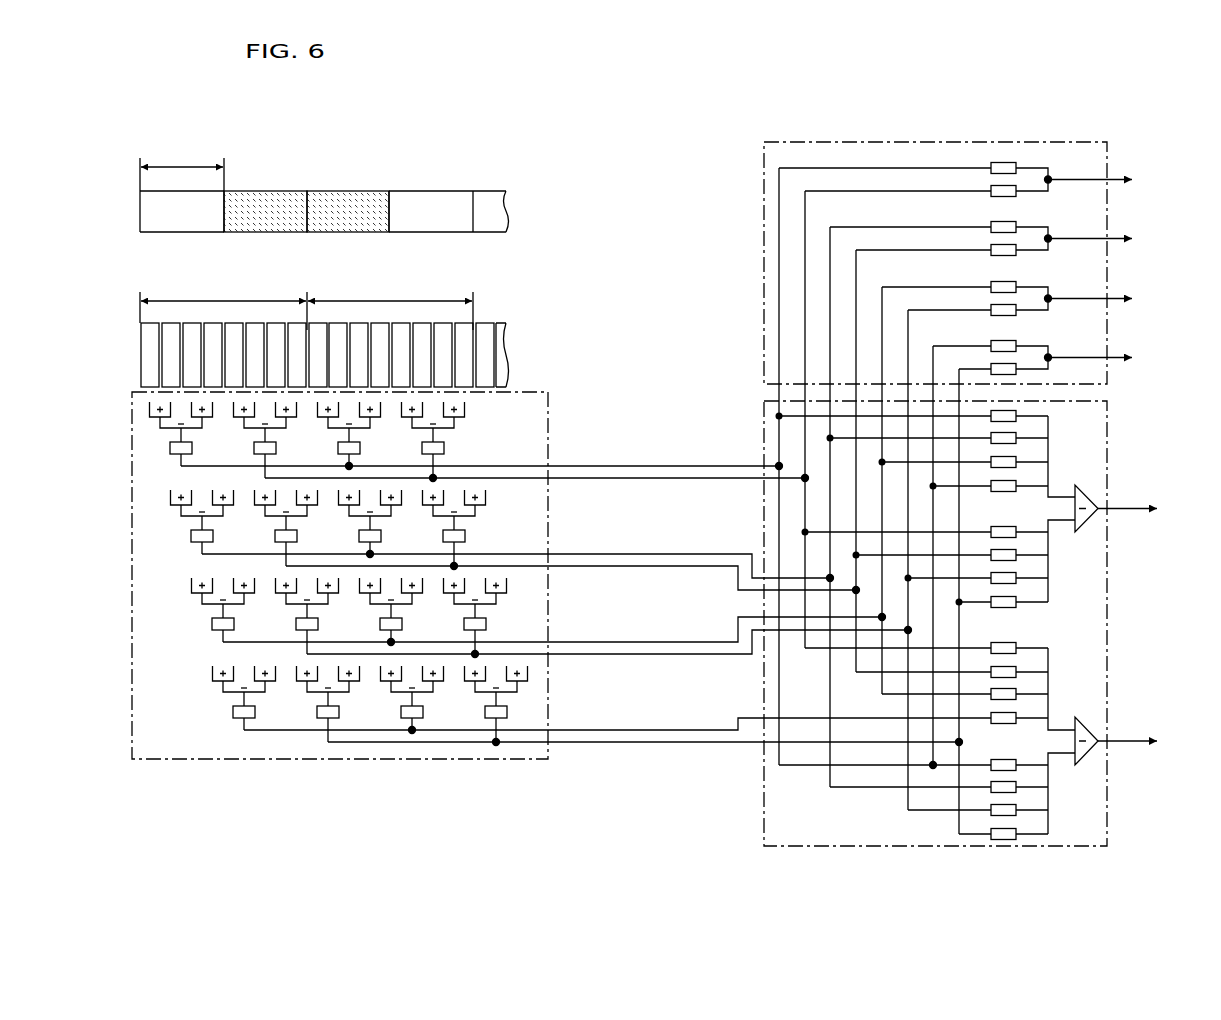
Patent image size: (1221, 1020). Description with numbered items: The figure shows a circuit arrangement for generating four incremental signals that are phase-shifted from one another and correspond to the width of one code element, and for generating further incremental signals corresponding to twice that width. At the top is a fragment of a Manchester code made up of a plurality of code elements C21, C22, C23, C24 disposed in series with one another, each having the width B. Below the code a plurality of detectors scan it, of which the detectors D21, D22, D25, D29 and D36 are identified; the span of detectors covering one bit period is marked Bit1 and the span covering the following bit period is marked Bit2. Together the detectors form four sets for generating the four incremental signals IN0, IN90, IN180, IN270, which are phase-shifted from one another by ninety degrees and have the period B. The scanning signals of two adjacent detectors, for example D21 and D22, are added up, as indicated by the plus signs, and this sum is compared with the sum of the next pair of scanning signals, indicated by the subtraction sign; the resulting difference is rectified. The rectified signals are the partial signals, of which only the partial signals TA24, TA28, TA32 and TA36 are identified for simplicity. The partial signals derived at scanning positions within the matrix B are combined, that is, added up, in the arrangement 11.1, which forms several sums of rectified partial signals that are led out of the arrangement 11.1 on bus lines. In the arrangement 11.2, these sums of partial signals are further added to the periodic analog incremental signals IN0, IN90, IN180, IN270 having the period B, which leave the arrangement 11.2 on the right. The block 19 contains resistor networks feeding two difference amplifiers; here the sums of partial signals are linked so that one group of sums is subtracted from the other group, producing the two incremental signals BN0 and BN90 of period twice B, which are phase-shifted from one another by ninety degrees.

The width of one code element B is at (182, 168).
The code element C21 is at (202, 200).
The code element C22 is at (283, 200).
The code element C23 is at (363, 200).
The code element C24 is at (442, 200).
The detector D21 is at (150, 330).
The detector D22 is at (172, 330).
The detector D25 is at (232, 330).
The detector D29 is at (320, 330).
The detector D36 is at (465, 330).
The first bit period Bit1 is at (223, 304).
The second bit period Bit2 is at (390, 304).
The arrangement 11.1 is at (365, 614).
The arrangement 11.2 is at (766, 166).
The evaluation unit 19 is at (1098, 832).
The partial signal TA24 is at (273, 730).
The partial signal TA28 is at (327, 735).
The partial signal TA32 is at (413, 720).
The partial signal TA36 is at (497, 720).
The incremental signal IN0 is at (1108, 180).
The incremental signal IN90 is at (1115, 240).
The incremental signal IN180 is at (1119, 300).
The incremental signal IN270 is at (1120, 360).
The incremental signal BN0 is at (1123, 508).
The incremental signal BN90 is at (1123, 741).